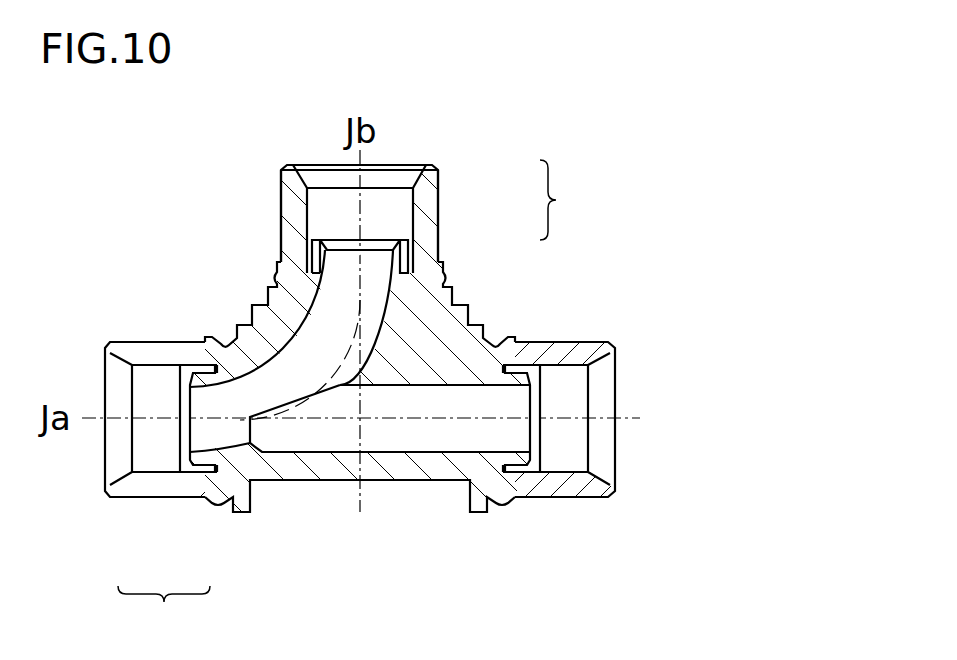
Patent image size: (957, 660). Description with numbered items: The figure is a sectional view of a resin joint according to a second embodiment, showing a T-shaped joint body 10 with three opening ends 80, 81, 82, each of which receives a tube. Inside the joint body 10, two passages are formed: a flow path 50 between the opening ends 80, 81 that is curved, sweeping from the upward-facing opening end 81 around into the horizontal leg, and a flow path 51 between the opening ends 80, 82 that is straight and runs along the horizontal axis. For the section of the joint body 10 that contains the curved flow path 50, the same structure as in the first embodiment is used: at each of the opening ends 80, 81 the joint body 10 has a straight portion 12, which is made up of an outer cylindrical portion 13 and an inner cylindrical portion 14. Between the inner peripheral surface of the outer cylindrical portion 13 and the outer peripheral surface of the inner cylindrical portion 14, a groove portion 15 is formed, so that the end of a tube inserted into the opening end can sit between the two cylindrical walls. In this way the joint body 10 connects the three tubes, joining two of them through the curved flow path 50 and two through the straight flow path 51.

The joint body 10 is at (115, 247).
The straight portion 12 is at (356, 399).
The outer cylindrical portion 13 is at (424, 200).
The inner cylindrical portion 14 is at (404, 252).
The groove portion 15 is at (399, 228).
The flow path 50 is at (294, 357).
The flow path 51 is at (400, 445).
The opening end 80 is at (84, 378).
The opening end 81 is at (316, 146).
The opening end 82 is at (630, 370).